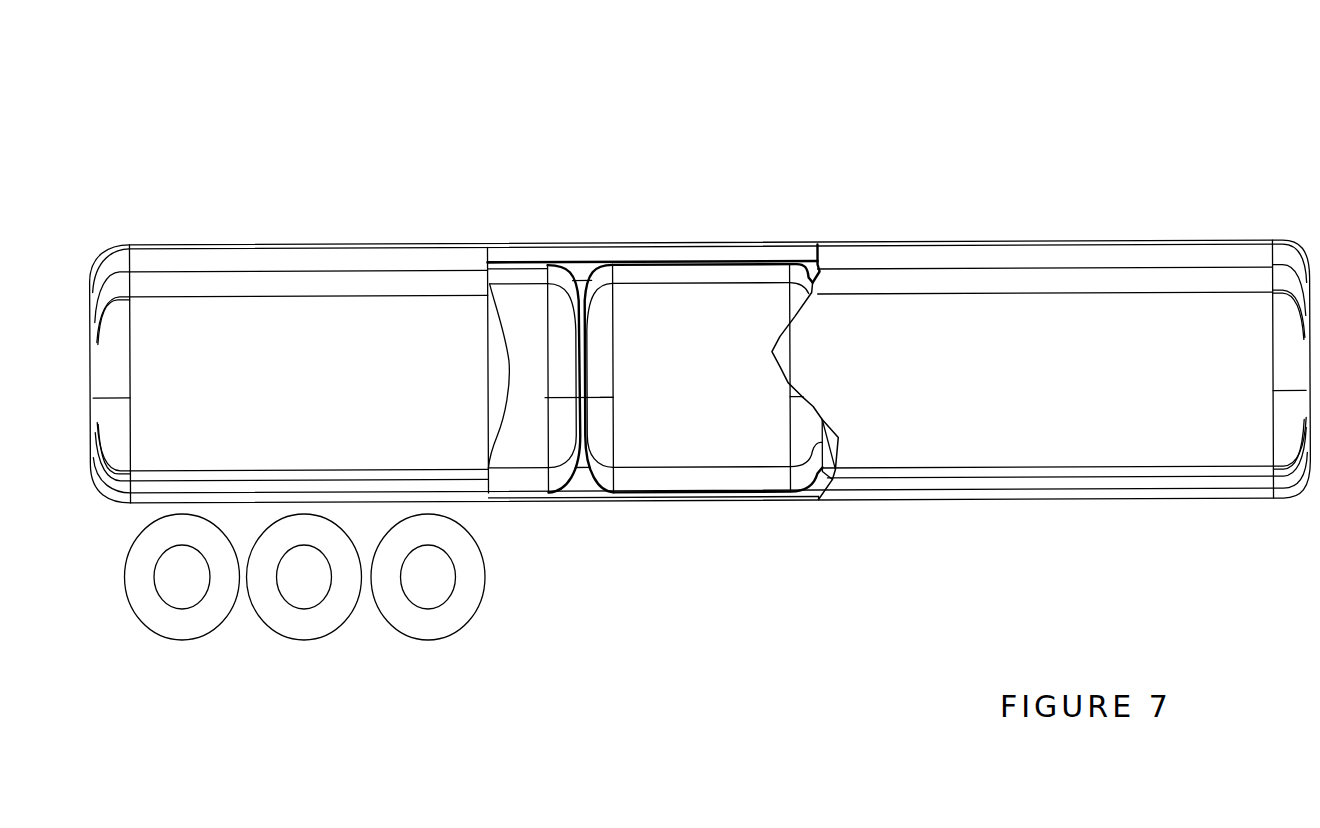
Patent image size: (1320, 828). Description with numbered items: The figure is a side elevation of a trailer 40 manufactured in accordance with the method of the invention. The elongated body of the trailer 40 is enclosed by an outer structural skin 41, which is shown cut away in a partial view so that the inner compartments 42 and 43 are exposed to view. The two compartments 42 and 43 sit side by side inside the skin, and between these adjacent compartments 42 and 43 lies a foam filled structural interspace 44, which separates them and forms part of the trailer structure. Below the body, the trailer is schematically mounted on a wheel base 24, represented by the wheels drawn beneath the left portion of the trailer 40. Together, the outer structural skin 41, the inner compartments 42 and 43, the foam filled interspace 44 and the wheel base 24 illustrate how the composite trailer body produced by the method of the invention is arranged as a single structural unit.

The trailer 40 is at (1003, 118).
The outer structural skin 41 is at (1033, 333).
The inner compartment 42 is at (517, 307).
The inner compartment 43 is at (667, 308).
The foam filled structural interspace 44 is at (580, 273).
The wheel base 24 is at (475, 587).